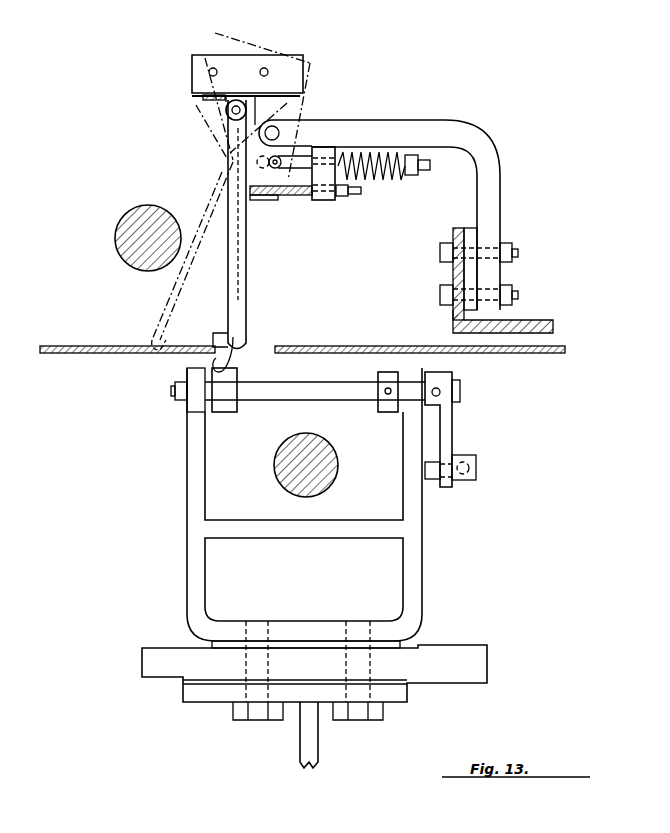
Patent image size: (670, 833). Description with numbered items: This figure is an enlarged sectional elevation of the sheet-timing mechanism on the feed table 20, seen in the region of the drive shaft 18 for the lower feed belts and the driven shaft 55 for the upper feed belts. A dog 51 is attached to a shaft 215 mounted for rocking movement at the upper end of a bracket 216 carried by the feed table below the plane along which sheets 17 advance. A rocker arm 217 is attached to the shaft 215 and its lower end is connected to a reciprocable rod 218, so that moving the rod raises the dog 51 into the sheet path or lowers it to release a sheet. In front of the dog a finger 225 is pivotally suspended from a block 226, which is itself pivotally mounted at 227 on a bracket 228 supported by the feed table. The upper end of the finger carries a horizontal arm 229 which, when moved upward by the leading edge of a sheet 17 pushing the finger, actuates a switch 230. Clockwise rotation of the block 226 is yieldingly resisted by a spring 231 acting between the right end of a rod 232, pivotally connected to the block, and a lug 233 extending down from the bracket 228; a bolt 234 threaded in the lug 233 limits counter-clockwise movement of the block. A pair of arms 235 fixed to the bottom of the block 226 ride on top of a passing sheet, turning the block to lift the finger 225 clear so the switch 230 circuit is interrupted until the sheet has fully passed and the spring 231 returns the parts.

The sheet 17 is at (62, 352).
The shaft 18 is at (288, 461).
The feed table 20 is at (292, 744).
The dog 51 is at (210, 364).
The driven shaft 55 is at (115, 236).
The shaft 215 is at (306, 390).
The bracket 216 is at (186, 486).
The rocker arm 217 is at (453, 428).
The rod 218 is at (470, 458).
The finger 225 is at (246, 303).
The block 226 is at (228, 138).
The pivotal support 227 is at (274, 131).
The bracket 228 is at (441, 121).
The horizontal arm 229 is at (226, 112).
The switch 230 is at (196, 98).
The spring 231 is at (378, 182).
The rod 232 is at (291, 196).
The lug 233 is at (326, 202).
The bolt 234 is at (312, 192).
The arms 235 is at (229, 352).